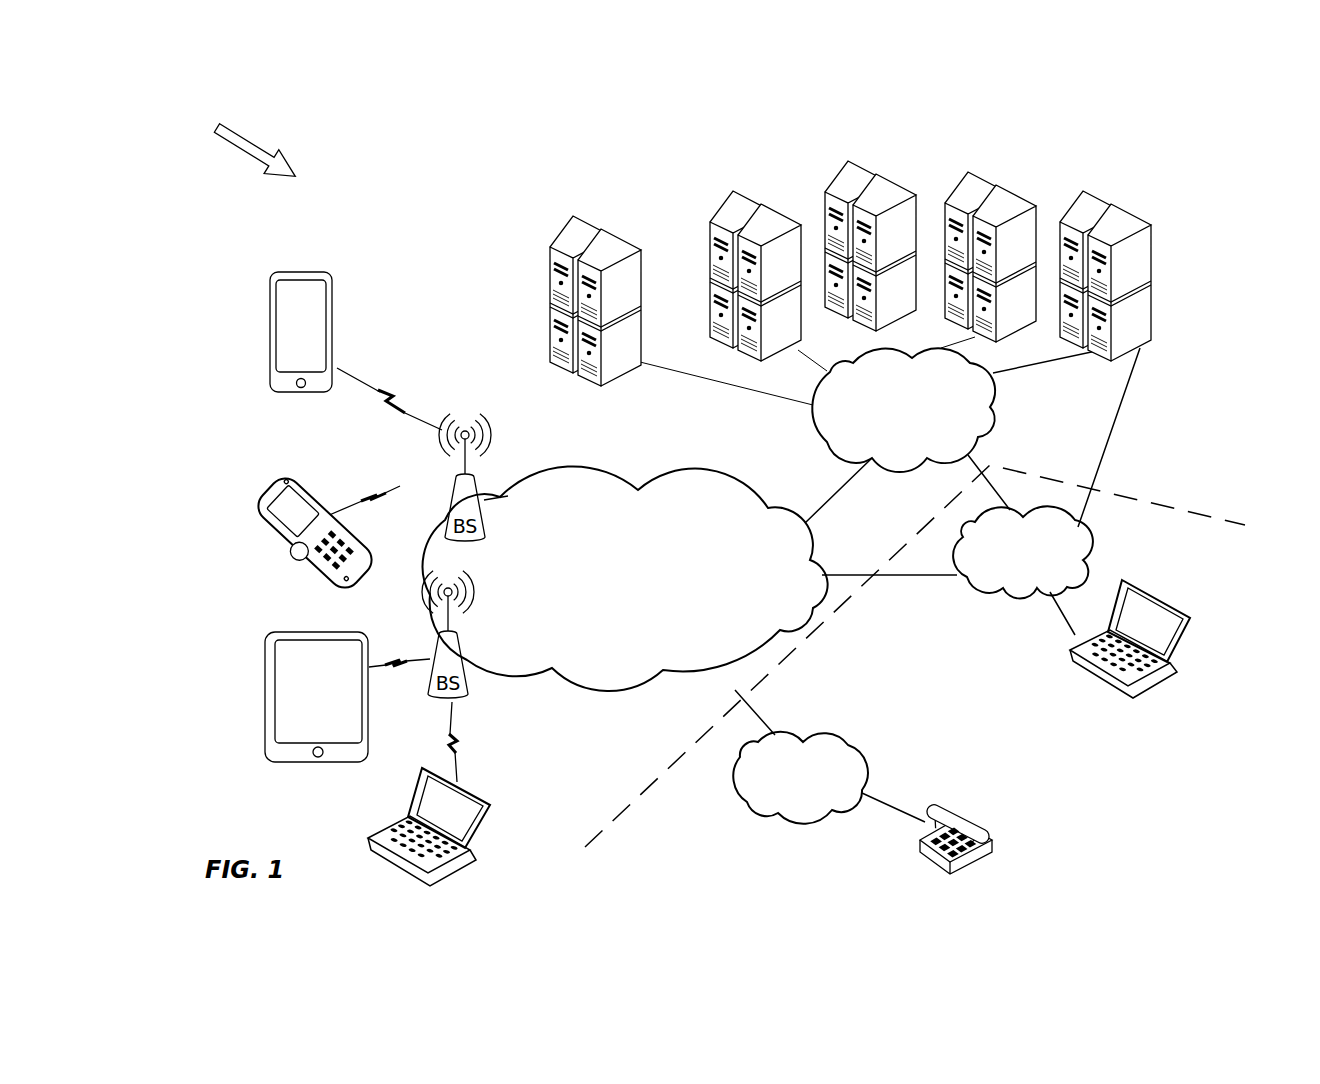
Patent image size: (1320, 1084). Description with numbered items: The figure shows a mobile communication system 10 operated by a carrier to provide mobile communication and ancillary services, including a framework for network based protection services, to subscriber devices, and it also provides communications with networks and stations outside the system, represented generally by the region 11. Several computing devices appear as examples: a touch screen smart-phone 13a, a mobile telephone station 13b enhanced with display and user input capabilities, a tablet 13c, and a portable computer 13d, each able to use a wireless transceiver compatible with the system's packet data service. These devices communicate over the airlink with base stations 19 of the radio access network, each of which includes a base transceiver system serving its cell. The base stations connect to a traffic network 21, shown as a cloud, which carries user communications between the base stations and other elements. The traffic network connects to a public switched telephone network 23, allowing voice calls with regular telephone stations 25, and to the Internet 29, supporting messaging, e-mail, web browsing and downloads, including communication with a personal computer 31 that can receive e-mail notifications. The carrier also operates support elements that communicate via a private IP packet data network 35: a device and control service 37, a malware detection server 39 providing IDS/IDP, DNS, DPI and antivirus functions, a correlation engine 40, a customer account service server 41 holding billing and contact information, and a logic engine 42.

The mobile communication system 10 is at (249, 147).
The region outside the mobile communication system 11 is at (915, 656).
The touch screen smart-phone 13a is at (270, 310).
The mobile telephone station 13b is at (268, 506).
The tablet 13c is at (266, 663).
The portable computer 13d is at (403, 806).
The base station 19 is at (452, 493).
The traffic network 21 is at (565, 470).
The public switched telephone network 23 is at (867, 760).
The telephone station 25 is at (920, 853).
The Internet 29 is at (1008, 599).
The personal computer 31 is at (1113, 684).
The private IP type packet data network 35 is at (993, 421).
The device and control service 37 is at (550, 247).
The malware detection server 39 is at (750, 202).
The correlation engine 40 is at (902, 186).
The customer account service server 41 is at (1152, 340).
The logic engine 42 is at (1022, 198).